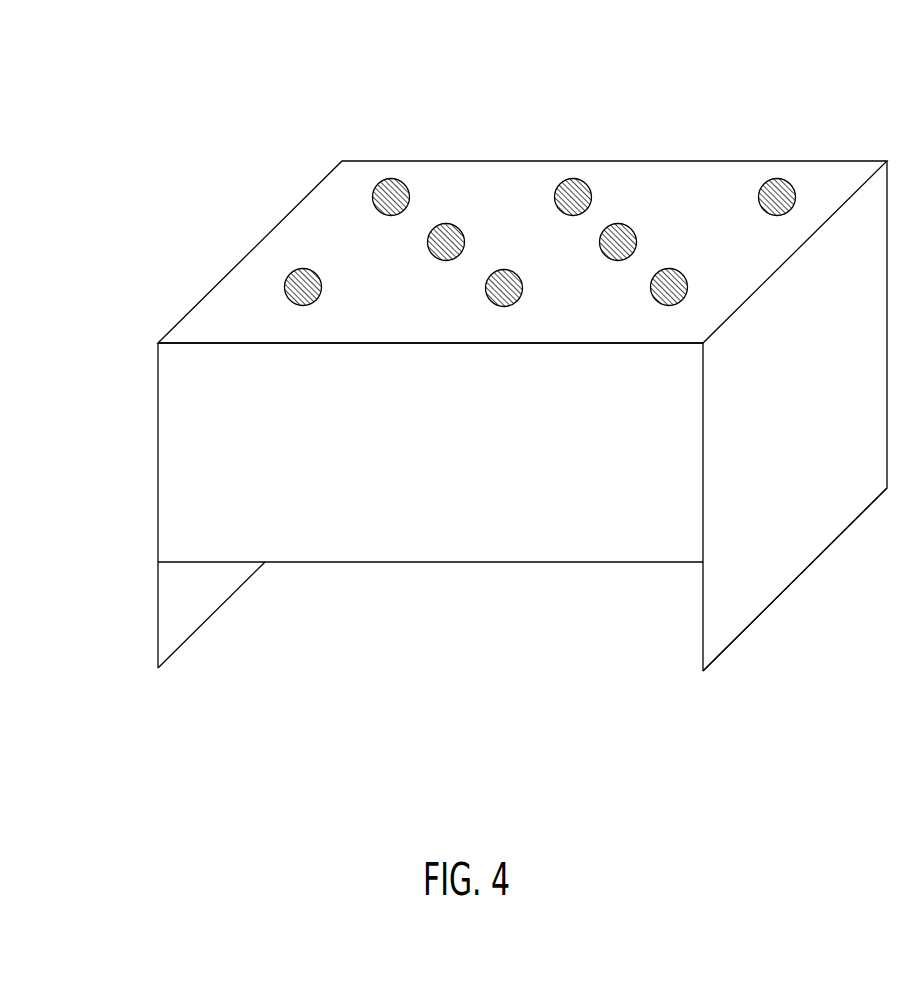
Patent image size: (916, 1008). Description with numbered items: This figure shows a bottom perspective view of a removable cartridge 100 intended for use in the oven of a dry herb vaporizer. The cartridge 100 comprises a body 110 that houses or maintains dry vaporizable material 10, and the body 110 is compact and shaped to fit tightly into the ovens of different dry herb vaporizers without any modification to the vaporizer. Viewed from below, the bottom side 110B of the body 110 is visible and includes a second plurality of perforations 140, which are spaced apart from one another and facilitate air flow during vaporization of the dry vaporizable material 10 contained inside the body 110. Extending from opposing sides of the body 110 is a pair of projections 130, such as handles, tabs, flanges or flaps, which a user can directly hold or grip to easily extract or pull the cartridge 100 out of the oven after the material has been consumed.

The removable cartridge 100 is at (285, 107).
The dry vaporizable material 10 is at (392, 194).
The second plurality of perforations 140 is at (575, 178).
The body 110 is at (610, 543).
The bottom side 110B is at (688, 178).
The pair of projections 130 is at (158, 617).